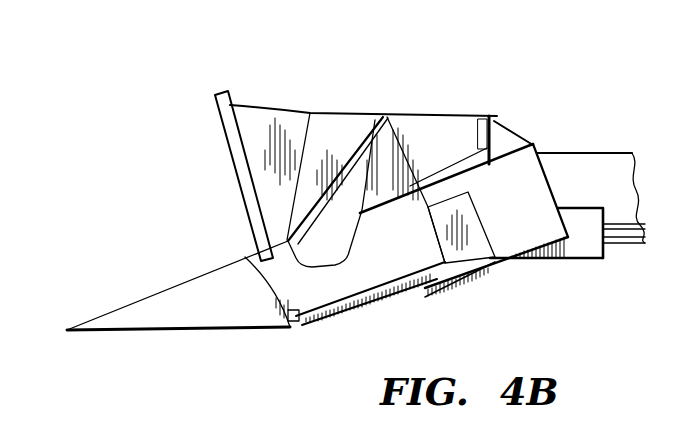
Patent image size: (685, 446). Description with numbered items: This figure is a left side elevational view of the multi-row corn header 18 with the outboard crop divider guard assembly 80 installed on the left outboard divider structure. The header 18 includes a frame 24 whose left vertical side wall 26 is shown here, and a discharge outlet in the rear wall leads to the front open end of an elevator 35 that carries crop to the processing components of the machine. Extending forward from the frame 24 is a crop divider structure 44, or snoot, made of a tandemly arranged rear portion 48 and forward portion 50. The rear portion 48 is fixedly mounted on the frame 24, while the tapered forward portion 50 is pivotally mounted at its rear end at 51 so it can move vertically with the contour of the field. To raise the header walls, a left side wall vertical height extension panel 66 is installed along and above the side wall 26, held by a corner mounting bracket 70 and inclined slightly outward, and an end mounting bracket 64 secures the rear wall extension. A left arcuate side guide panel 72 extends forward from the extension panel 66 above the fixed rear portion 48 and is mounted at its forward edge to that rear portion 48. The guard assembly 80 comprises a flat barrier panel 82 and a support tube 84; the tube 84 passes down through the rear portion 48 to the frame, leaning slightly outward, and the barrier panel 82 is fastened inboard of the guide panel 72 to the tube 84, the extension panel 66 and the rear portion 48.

The outboard guard assembly 80 is at (276, 100).
The support tube 84 is at (212, 176).
The multi-row corn header 18 is at (236, 197).
The barrier panel 82 is at (352, 144).
The left arcuate side guide panel 72 is at (337, 240).
The left side wall vertical height extension panel 66 is at (430, 144).
The corner mounting bracket 70 is at (478, 132).
The end mounting bracket 64 is at (515, 131).
The left vertical side wall 26 is at (530, 201).
The frame 24 is at (470, 295).
The elevator 35 is at (585, 168).
The rear portion 48 is at (263, 262).
The crop divider structure 44 is at (181, 275).
The forward portion 50 is at (108, 316).
The pivot mounting 51 is at (297, 323).